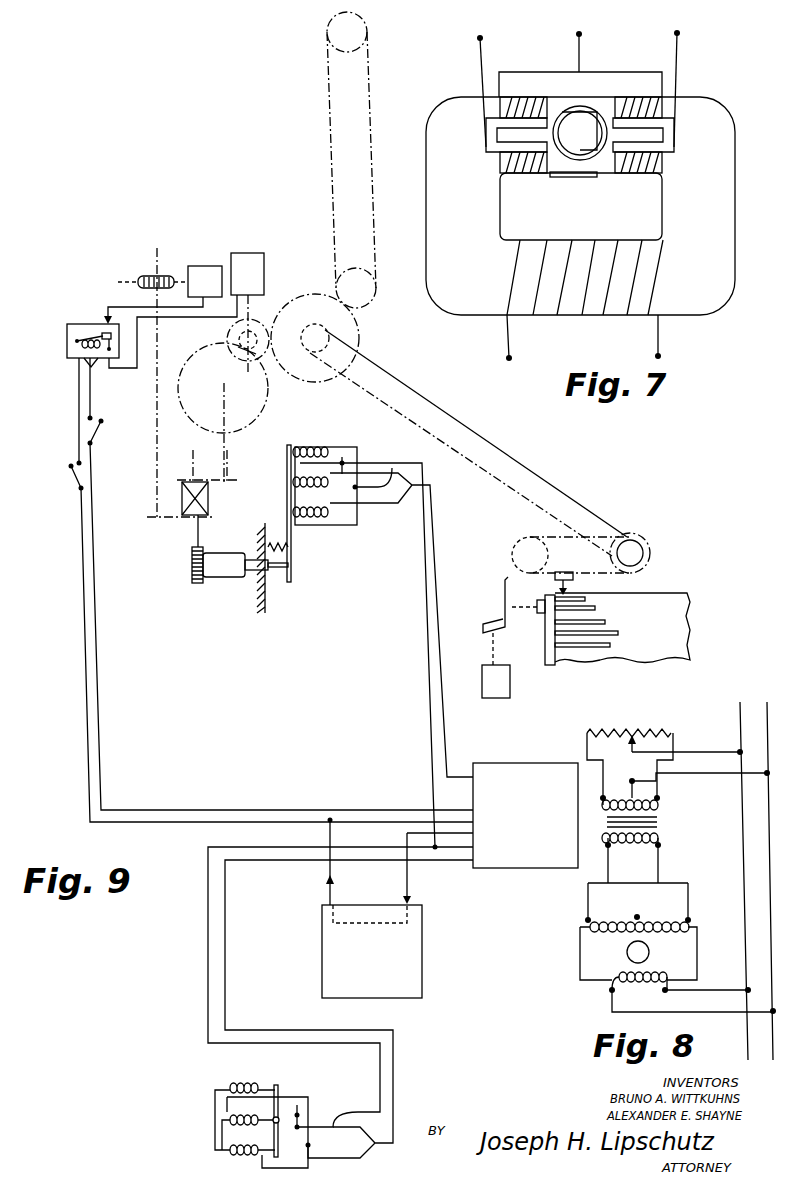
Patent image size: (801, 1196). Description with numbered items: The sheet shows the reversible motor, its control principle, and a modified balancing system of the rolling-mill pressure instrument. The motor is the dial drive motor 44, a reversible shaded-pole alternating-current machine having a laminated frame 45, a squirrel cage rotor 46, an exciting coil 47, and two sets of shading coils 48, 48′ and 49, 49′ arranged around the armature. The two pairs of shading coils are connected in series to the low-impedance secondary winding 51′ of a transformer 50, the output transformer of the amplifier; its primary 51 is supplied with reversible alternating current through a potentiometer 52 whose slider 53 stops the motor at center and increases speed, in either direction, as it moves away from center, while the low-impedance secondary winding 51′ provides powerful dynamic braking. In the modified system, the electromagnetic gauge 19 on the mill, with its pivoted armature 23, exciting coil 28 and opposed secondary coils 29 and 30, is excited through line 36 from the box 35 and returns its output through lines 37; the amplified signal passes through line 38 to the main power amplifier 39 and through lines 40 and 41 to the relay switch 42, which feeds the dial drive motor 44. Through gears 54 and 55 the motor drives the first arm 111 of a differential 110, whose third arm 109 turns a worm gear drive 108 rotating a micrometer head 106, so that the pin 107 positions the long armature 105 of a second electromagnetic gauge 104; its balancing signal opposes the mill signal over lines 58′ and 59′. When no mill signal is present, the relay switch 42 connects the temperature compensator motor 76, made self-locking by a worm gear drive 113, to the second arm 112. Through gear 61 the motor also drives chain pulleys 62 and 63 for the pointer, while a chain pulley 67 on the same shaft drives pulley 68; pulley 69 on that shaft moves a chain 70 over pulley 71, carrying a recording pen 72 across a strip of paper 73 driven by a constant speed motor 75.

In FIG. 9, the electromagnetic gauge 19 is at (215, 1134).
In FIG. 9, the armature 23 is at (281, 1091).
In FIG. 9, the exciting coil 28 is at (229, 1117).
In FIG. 9, the secondary coil 29 is at (240, 1082).
In FIG. 9, the secondary coil 30 is at (238, 1156).
In FIG. 9, the box 35 is at (525, 815).
In FIG. 9, the line 36 is at (362, 1112).
In FIG. 9, the lines 37 is at (393, 1097).
In FIG. 9, the line 38 is at (407, 833).
In FIG. 9, the main power amplifier 39 is at (372, 951).
In FIG. 9, the line 40 is at (333, 891).
In FIG. 9, the line 41 is at (84, 637).
In FIG. 9, the relay switch 42 is at (88, 324).
In FIG. 7, the dial drive motor 44 is at (722, 145).
In FIG. 9, the dial drive motor 44 is at (248, 253).
In FIG. 7, the laminated frame 45 is at (426, 218).
In FIG. 7, the squirrel cage rotor 46 is at (570, 152).
In FIG. 8, the squirrel cage rotor 46 is at (649, 952).
In FIG. 7, the exciting coil 47 is at (507, 315).
In FIG. 8, the exciting coil 47 is at (636, 984).
In FIG. 7, the shading coil 48 is at (634, 100).
In FIG. 8, the shading coil 48 is at (690, 932).
In FIG. 7, the shading coil 48′ is at (516, 173).
In FIG. 7, the shading coil 49 is at (516, 102).
In FIG. 8, the shading coil 49 is at (592, 936).
In FIG. 7, the shading coil 49′ is at (622, 173).
In FIG. 8, the transformer 50 is at (660, 817).
In FIG. 8, the primary winding 51 is at (604, 810).
In FIG. 8, the secondary winding 51′ is at (606, 842).
In FIG. 8, the potentiometer 52 is at (611, 731).
In FIG. 8, the slider 53 is at (652, 742).
In FIG. 9, the gear 54 is at (231, 338).
In FIG. 9, the gear 55 is at (262, 400).
In FIG. 9, the line 58′ is at (448, 612).
In FIG. 9, the line 59′ is at (429, 613).
In FIG. 9, the gear 61 is at (359, 340).
In FIG. 9, the chain pulley 62 is at (376, 296).
In FIG. 9, the chain pulley 63 is at (367, 30).
In FIG. 9, the chain pulley 67 is at (313, 324).
In FIG. 9, the chain pulley 68 is at (650, 553).
In FIG. 9, the pulley 69 is at (634, 534).
In FIG. 9, the chain 70 is at (566, 538).
In FIG. 9, the pulley 71 is at (512, 555).
In FIG. 9, the recording pen 72 is at (575, 578).
In FIG. 9, the strip of paper 73 is at (555, 649).
In FIG. 9, the constant speed motor 75 is at (510, 694).
In FIG. 9, the temperature compensator motor 76 is at (203, 266).
In FIG. 9, the second electromagnetic gauge 104 is at (313, 447).
In FIG. 9, the long armature 105 is at (295, 569).
In FIG. 9, the micrometer head 106 is at (226, 578).
In FIG. 9, the pin 107 is at (277, 572).
In FIG. 9, the worm gear drive 108 is at (192, 576).
In FIG. 9, the third arm 109 is at (196, 534).
In FIG. 9, the differential 110 is at (210, 500).
In FIG. 9, the first arm 111 is at (227, 440).
In FIG. 9, the second arm 112 is at (157, 441).
In FIG. 9, the worm gear drive 113 is at (148, 276).